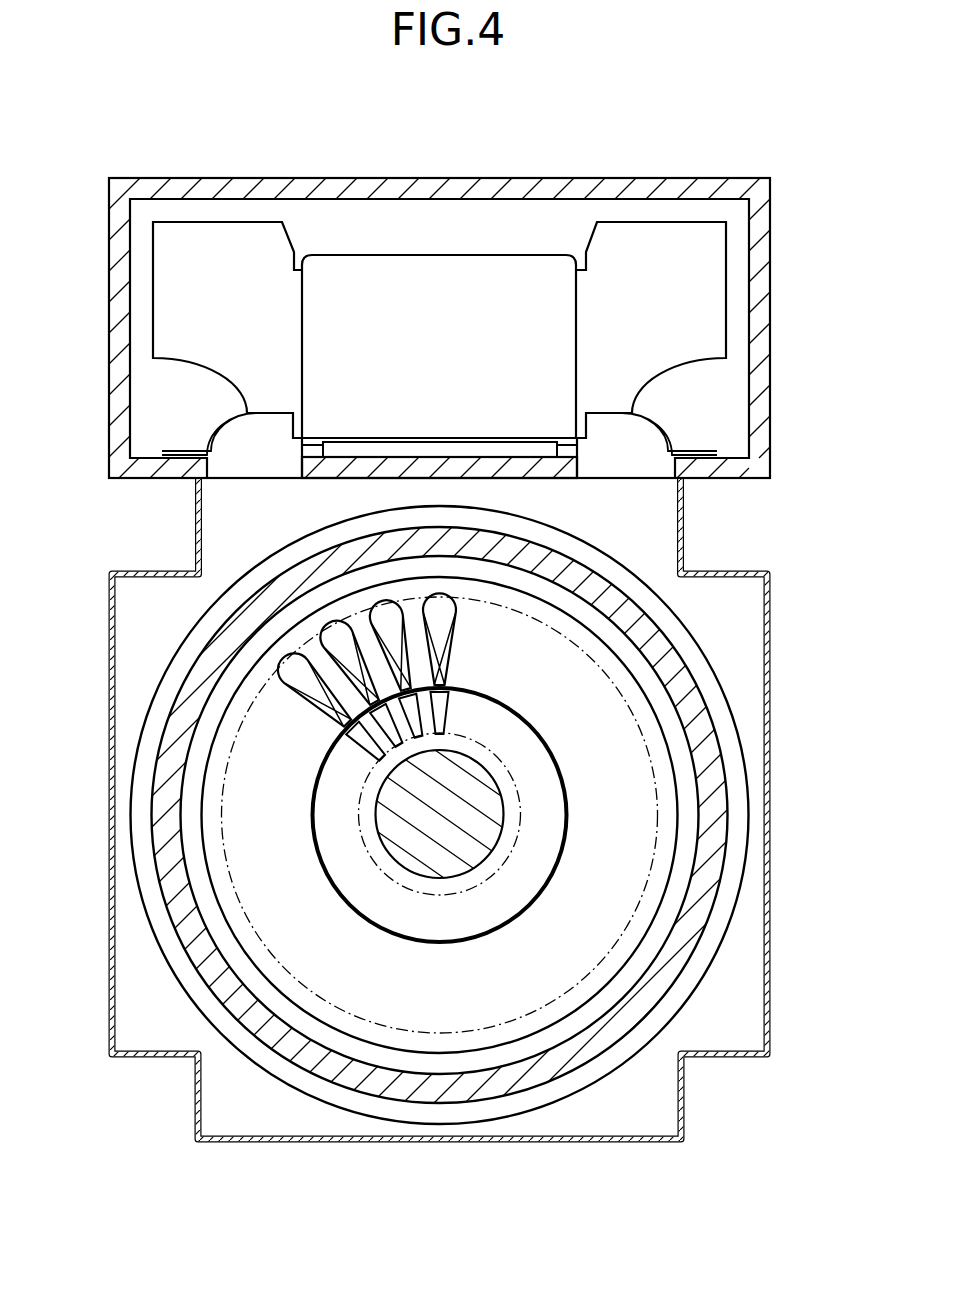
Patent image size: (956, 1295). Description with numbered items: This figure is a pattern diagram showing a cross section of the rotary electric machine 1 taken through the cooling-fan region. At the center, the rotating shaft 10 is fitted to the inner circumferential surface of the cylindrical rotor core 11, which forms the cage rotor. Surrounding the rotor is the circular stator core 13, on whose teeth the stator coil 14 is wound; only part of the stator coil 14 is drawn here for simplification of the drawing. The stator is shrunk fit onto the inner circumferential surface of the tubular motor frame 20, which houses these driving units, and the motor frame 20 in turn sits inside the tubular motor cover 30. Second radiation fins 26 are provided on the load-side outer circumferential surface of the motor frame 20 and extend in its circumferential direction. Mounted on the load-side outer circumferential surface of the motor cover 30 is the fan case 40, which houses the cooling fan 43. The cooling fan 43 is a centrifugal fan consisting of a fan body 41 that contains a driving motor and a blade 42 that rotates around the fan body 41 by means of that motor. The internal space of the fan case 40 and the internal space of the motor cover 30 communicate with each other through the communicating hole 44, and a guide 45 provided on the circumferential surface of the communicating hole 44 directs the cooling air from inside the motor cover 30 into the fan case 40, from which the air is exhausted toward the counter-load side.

The rotary electric machine 1 is at (656, 110).
The rotating shaft 10 is at (400, 817).
The rotor core 11 is at (343, 862).
The stator core 13 is at (262, 653).
The stator coil 14 is at (297, 672).
The motor frame 20 is at (550, 1067).
The second radiation fins 26 is at (728, 745).
The motor cover 30 is at (770, 950).
The fan case 40 is at (600, 187).
The fan body 41 is at (405, 277).
The blade 42 is at (212, 247).
The cooling fan 43 is at (178, 123).
The communicating hole 44 is at (263, 466).
The guide 45 is at (638, 437).